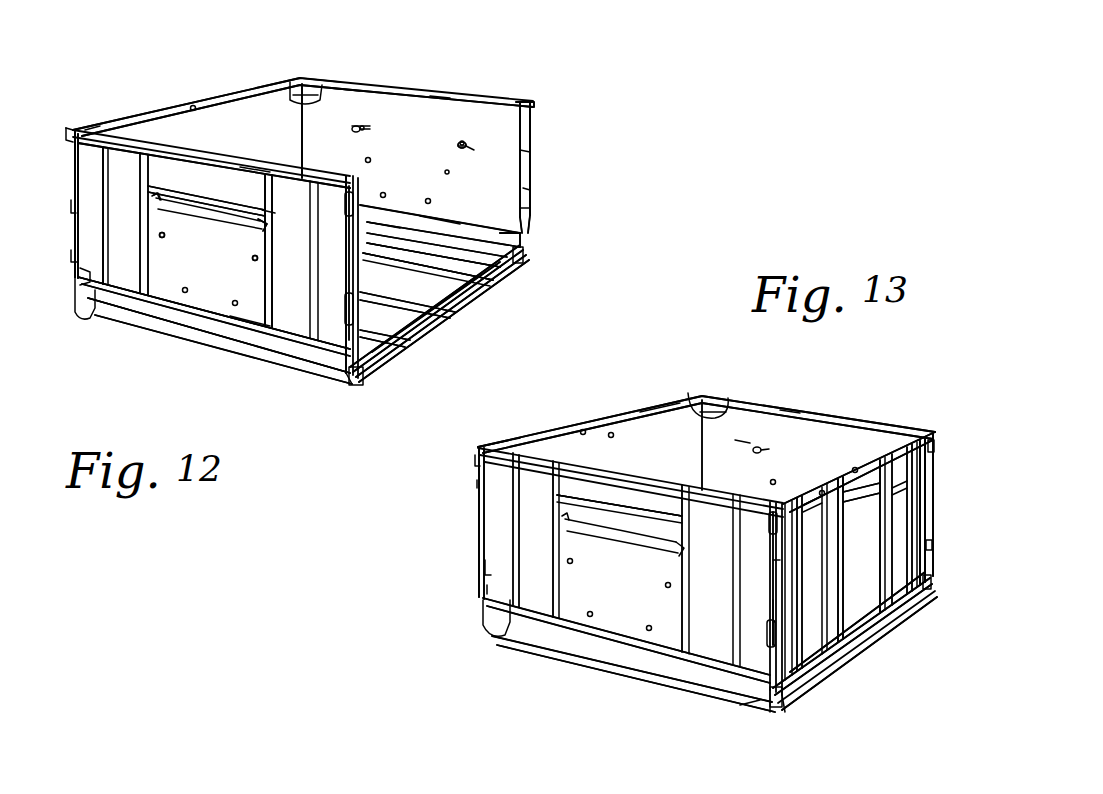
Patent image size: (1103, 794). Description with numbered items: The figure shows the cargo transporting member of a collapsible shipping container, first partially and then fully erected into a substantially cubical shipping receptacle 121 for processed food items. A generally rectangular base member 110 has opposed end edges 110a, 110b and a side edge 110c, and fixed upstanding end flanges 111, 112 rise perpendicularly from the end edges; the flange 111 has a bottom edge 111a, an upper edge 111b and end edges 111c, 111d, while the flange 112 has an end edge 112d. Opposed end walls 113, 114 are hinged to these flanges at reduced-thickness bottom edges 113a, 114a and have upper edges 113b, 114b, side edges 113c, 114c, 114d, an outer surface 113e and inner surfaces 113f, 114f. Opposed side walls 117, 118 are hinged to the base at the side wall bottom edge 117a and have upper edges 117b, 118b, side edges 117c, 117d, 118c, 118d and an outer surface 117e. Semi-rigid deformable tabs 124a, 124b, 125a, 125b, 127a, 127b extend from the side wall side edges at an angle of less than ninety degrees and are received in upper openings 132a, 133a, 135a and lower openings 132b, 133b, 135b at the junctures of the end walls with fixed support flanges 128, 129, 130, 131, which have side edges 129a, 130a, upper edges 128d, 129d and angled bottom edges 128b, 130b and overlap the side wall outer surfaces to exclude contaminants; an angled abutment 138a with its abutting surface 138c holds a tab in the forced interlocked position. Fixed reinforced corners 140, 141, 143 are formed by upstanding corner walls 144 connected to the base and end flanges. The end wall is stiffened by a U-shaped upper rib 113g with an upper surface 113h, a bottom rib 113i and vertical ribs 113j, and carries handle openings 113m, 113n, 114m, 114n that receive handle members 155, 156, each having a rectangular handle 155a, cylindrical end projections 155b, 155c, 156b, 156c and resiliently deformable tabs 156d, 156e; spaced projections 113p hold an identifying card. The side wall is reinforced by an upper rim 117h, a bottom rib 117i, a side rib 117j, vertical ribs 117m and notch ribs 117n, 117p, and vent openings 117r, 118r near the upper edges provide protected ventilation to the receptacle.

In FIG. 12, the base member 110 is at (438, 335).
In FIG. 13, the base member 110 is at (628, 682).
In FIG. 13, the end edge 110a is at (928, 575).
In FIG. 12, the end edge 110b is at (226, 352).
In FIG. 13, the end edge 110b is at (540, 652).
In FIG. 12, the side edge 110c is at (445, 300).
In FIG. 13, the side edge 110c is at (900, 600).
In FIG. 12, the fixed upstanding end flange 111 is at (118, 305).
In FIG. 12, the bottom edge 111a is at (145, 318).
In FIG. 13, the bottom edge 111a is at (512, 640).
In FIG. 12, the upper edge 111b is at (258, 350).
In FIG. 13, the upper edge 111b is at (510, 645).
In FIG. 12, the end edge 111c is at (98, 330).
In FIG. 13, the end edge 111c is at (487, 606).
In FIG. 12, the end edge 111d is at (345, 370).
In FIG. 13, the end edge 111d is at (757, 712).
In FIG. 12, the fixed upstanding end flange 112 is at (522, 247).
In FIG. 13, the fixed upstanding end flange 112 is at (930, 512).
In FIG. 12, the end edge 112d is at (532, 237).
In FIG. 12, the end wall 113 is at (298, 282).
In FIG. 13, the end wall 113 is at (620, 612).
In FIG. 12, the bottom edge 113a is at (248, 330).
In FIG. 12, the upper edge 113b is at (218, 172).
In FIG. 12, the side edge 113c is at (82, 283).
In FIG. 13, the side edge 113c is at (486, 497).
In FIG. 12, the outer surface 113e is at (213, 297).
In FIG. 13, the outer surface 113e is at (643, 601).
In FIG. 13, the inner surface 113f is at (645, 484).
In FIG. 12, the U-shaped upper rib 113g is at (258, 168).
In FIG. 12, the upper surface 113h is at (280, 168).
In FIG. 12, the bottom rib 113i is at (266, 322).
In FIG. 12, the vertical ribs 113j is at (276, 228).
In FIG. 12, the opening 113m is at (160, 170).
In FIG. 12, the opening 113n is at (270, 215).
In FIG. 12, the projections 113p is at (183, 293).
In FIG. 12, the end wall 114 is at (425, 100).
In FIG. 13, the end wall 114 is at (770, 415).
In FIG. 12, the bottom edge 114a is at (438, 218).
In FIG. 12, the upper edge 114b is at (441, 98).
In FIG. 12, the side edge 114c is at (303, 157).
In FIG. 12, the side edge 114d is at (538, 172).
In FIG. 12, the inner surface 114f is at (345, 84).
In FIG. 13, the inner surface 114f is at (790, 420).
In FIG. 12, the opening 114m is at (364, 128).
In FIG. 12, the opening 114n is at (455, 146).
In FIG. 12, the side wall 117 is at (470, 252).
In FIG. 13, the side wall 117 is at (850, 620).
In FIG. 12, the bottom edge 117a is at (458, 285).
In FIG. 13, the bottom edge 117a is at (880, 612).
In FIG. 12, the upper edge 117b is at (349, 250).
In FIG. 13, the upper edge 117b is at (868, 462).
In FIG. 13, the side edge 117c is at (772, 482).
In FIG. 12, the side edge 117d is at (500, 252).
In FIG. 13, the side edge 117d is at (918, 430).
In FIG. 12, the outer surface 117e is at (462, 270).
In FIG. 13, the outer surface 117e is at (870, 572).
In FIG. 13, the upper rim 117h is at (822, 495).
In FIG. 13, the bottom rib 117i is at (862, 620).
In FIG. 13, the side rib 117j is at (800, 640).
In FIG. 13, the vertical ribs 117m is at (860, 530).
In FIG. 13, the notch rib 117n is at (790, 686).
In FIG. 13, the notch rib 117p is at (922, 592).
In FIG. 13, the opening 117r is at (855, 468).
In FIG. 12, the side wall 118 is at (173, 122).
In FIG. 13, the side wall 118 is at (550, 435).
In FIG. 12, the upper edge 118b is at (193, 105).
In FIG. 13, the upper edge 118b is at (583, 430).
In FIG. 12, the side edge 118c is at (92, 128).
In FIG. 13, the side edge 118c is at (487, 447).
In FIG. 12, the side edge 118d is at (307, 82).
In FIG. 13, the side edge 118d is at (662, 410).
In FIG. 13, the opening 118r is at (611, 432).
In FIG. 13, the shipping receptacle 121 is at (740, 442).
In FIG. 13, the upper tab 124a is at (769, 527).
In FIG. 13, the lower tab 124b is at (767, 632).
In FIG. 12, the upper tab 125a is at (383, 220).
In FIG. 13, the upper tab 125a is at (940, 430).
In FIG. 12, the lower tab 125b is at (470, 232).
In FIG. 13, the lower tab 125b is at (932, 545).
In FIG. 12, the upper tab 127a is at (70, 128).
In FIG. 13, the upper tab 127a is at (475, 460).
In FIG. 12, the lower tab 127b is at (71, 220).
In FIG. 13, the lower tab 127b is at (485, 567).
In FIG. 12, the support flange 128 is at (362, 295).
In FIG. 13, the support flange 128 is at (773, 568).
In FIG. 12, the angled bottom edge 128b is at (405, 342).
In FIG. 13, the angled bottom edge 128b is at (718, 700).
In FIG. 12, the upper edge 128d is at (365, 200).
In FIG. 12, the support flange 129 is at (76, 198).
In FIG. 12, the side edge 129a is at (77, 262).
In FIG. 13, the side edge 129a is at (479, 517).
In FIG. 12, the upper edge 129d is at (110, 134).
In FIG. 12, the support flange 130 is at (536, 135).
In FIG. 13, the support flange 130 is at (930, 473).
In FIG. 12, the side edge 130a is at (537, 152).
In FIG. 12, the angled bottom edge 130b is at (536, 208).
In FIG. 12, the support flange 131 is at (300, 77).
In FIG. 12, the upper opening 132a is at (346, 214).
In FIG. 13, the upper opening 132a is at (773, 548).
In FIG. 12, the lower opening 132b is at (345, 302).
In FIG. 13, the lower opening 132b is at (770, 620).
In FIG. 12, the upper opening 133a is at (536, 110).
In FIG. 13, the upper opening 133a is at (934, 455).
In FIG. 12, the lower opening 133b is at (536, 190).
In FIG. 13, the lower opening 133b is at (930, 526).
In FIG. 13, the upper opening 135a is at (477, 484).
In FIG. 13, the lower opening 135b is at (487, 590).
In FIG. 12, the angled abutment 138a is at (322, 97).
In FIG. 13, the angled abutment 138a is at (718, 412).
In FIG. 12, the abutting surface 138c is at (292, 98).
In FIG. 13, the abutting surface 138c is at (692, 396).
In FIG. 12, the fixed reinforced corner 140 is at (350, 392).
In FIG. 13, the fixed reinforced corner 140 is at (767, 722).
In FIG. 12, the fixed reinforced corner 141 is at (525, 262).
In FIG. 13, the fixed reinforced corner 141 is at (932, 583).
In FIG. 12, the fixed reinforced corner 143 is at (86, 318).
In FIG. 13, the fixed reinforced corner 143 is at (473, 632).
In FIG. 12, the corner wall 144 is at (365, 382).
In FIG. 13, the corner wall 144 is at (787, 708).
In FIG. 12, the handle member 155 is at (190, 228).
In FIG. 13, the handle member 155 is at (607, 555).
In FIG. 12, the handle 155a is at (209, 259).
In FIG. 12, the end projection 155b is at (165, 200).
In FIG. 12, the end projection 155c is at (212, 236).
In FIG. 12, the handle member 156 is at (470, 148).
In FIG. 12, the end projection 156b is at (364, 124).
In FIG. 12, the end projection 156c is at (462, 142).
In FIG. 12, the resiliently deformable tab 156d is at (352, 129).
In FIG. 12, the resiliently deformable tab 156e is at (462, 140).